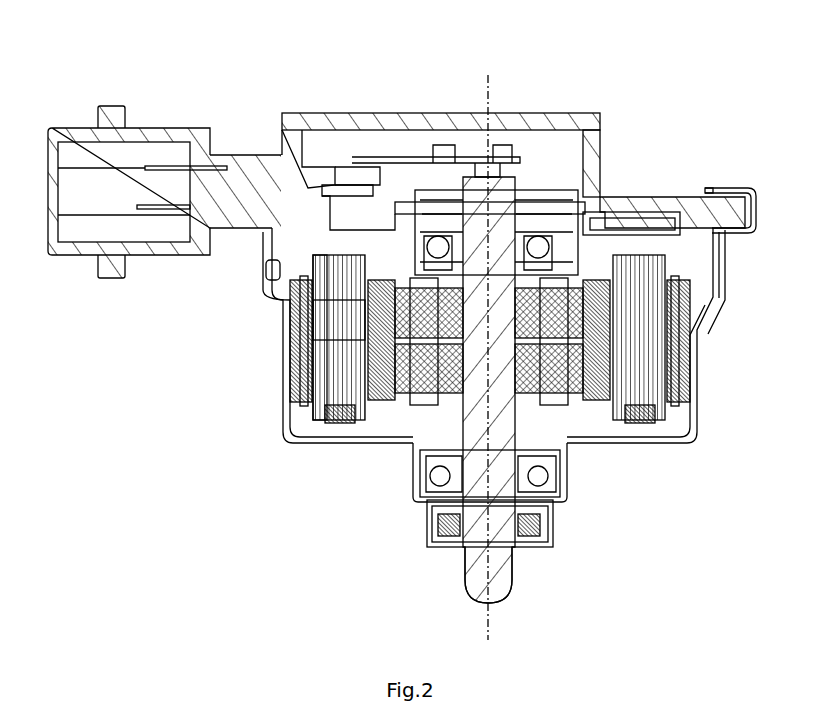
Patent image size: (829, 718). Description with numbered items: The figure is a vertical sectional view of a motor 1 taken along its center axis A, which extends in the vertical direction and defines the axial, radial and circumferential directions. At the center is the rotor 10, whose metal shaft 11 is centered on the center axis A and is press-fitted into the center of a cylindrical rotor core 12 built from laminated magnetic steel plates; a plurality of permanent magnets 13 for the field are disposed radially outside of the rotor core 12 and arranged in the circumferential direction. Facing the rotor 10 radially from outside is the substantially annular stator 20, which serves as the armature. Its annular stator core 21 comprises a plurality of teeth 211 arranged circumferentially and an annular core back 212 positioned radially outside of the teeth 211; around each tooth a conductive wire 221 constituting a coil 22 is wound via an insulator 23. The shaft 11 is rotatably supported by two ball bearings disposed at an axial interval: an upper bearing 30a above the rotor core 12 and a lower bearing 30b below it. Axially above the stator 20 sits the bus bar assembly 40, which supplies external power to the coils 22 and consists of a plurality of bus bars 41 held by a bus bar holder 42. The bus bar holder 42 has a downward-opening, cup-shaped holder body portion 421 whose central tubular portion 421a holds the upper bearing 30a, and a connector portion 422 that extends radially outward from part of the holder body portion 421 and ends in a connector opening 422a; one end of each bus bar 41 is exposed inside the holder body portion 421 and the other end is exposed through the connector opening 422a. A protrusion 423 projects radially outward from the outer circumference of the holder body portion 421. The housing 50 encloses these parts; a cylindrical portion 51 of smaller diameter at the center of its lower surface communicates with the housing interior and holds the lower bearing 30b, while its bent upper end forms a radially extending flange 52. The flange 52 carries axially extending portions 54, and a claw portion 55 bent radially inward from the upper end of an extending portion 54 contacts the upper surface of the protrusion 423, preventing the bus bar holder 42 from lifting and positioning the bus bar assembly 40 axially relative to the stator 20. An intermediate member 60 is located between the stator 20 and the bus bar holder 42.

The motor 1 is at (614, 80).
The rotor 10 is at (550, 410).
The shaft 11 is at (505, 572).
The rotor core 12 is at (574, 400).
The magnet 13 is at (620, 426).
The stator 20 is at (292, 440).
The stator core 21 is at (284, 316).
The teeth 211 is at (292, 377).
The core back 212 is at (292, 351).
The coil 22 is at (322, 430).
The conductive wire 221 is at (340, 430).
The insulator 23 is at (298, 404).
The upper bearing 30a is at (569, 240).
The lower bearing 30b is at (551, 506).
The bus bar assembly 40 is at (300, 112).
The bus bar 41 is at (330, 196).
The bus bar holder 42 is at (281, 131).
The holder body portion 421 is at (632, 205).
The tubular portion 421a is at (616, 235).
The connector portion 422 is at (198, 134).
The connector opening 422a is at (47, 152).
The protrusion 423 is at (722, 230).
The housing 50 is at (699, 386).
The cylindrical portion 51 is at (413, 480).
The flange 52 is at (707, 305).
The extending portion 54 is at (757, 206).
The claw portion 55 is at (722, 190).
The intermediate member 60 is at (283, 257).
The center axis A is at (491, 93).